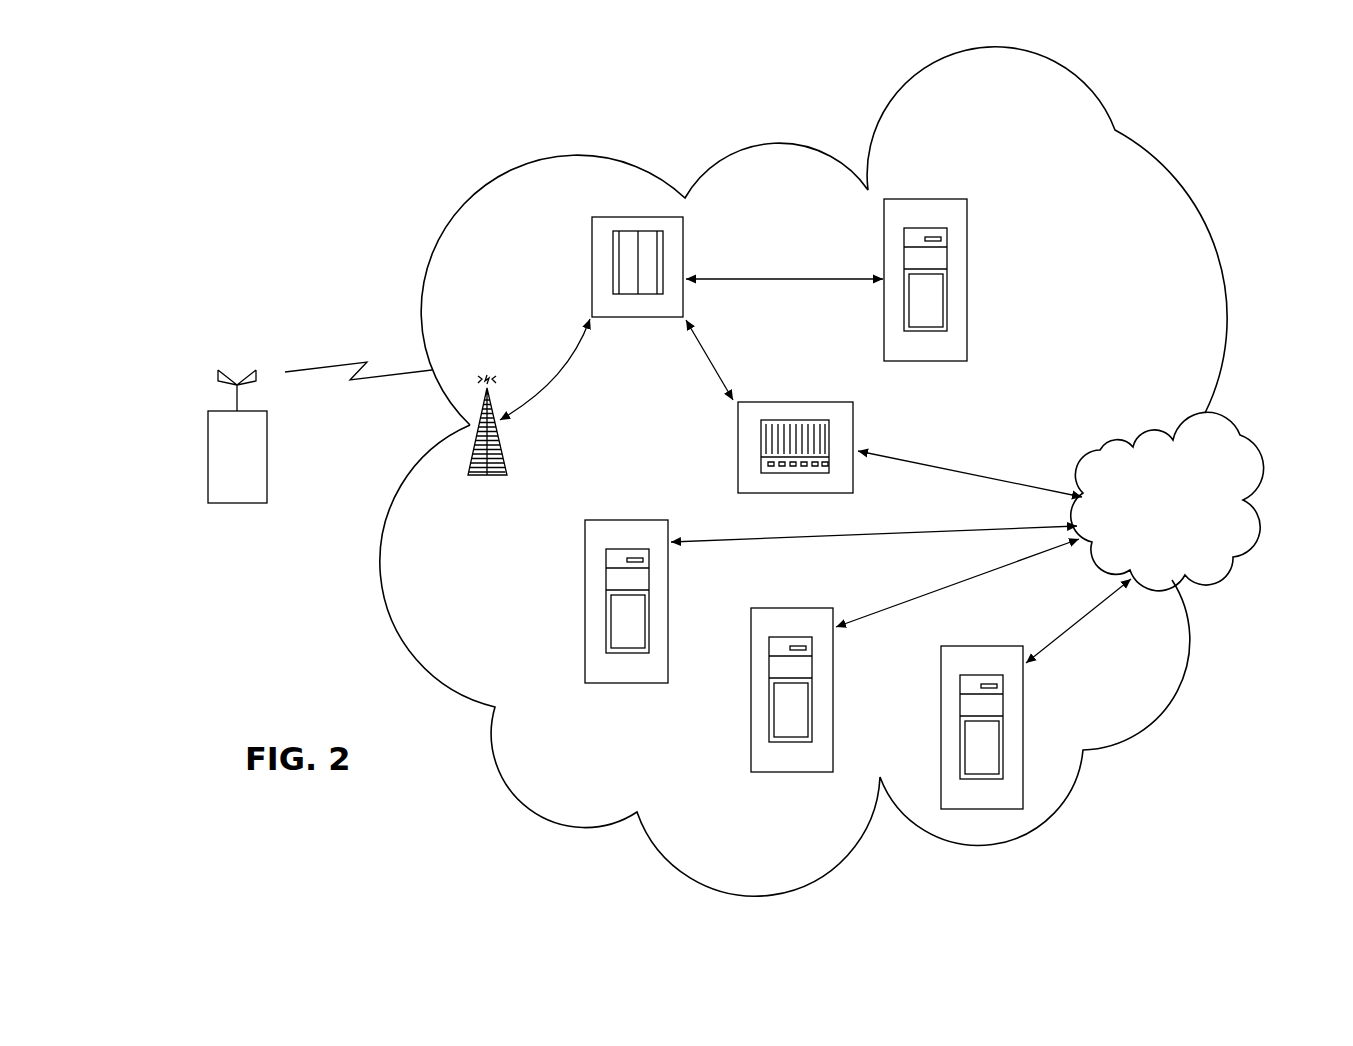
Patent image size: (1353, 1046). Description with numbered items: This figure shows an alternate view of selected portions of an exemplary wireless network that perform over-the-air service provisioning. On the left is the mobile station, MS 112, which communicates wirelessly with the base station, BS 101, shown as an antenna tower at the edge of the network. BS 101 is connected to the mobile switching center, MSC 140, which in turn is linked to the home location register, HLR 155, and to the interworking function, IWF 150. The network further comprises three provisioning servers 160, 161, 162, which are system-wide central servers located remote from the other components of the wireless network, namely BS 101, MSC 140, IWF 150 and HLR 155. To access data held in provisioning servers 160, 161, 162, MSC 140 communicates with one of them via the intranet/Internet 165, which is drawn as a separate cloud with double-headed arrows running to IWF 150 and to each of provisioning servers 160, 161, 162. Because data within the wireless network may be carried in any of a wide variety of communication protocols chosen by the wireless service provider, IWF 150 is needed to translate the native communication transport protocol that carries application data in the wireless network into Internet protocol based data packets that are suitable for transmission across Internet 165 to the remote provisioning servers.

The MS 112 is at (208, 458).
The BS 101 is at (508, 452).
The MSC 140 is at (590, 268).
The interworking function (IWF) 150 is at (795, 402).
The home location register (HLR) 155 is at (968, 280).
The provisioning server 160 is at (940, 679).
The provisioning server 161 is at (750, 730).
The provisioning server 162 is at (584, 600).
The intranet/Internet 165 is at (1254, 466).